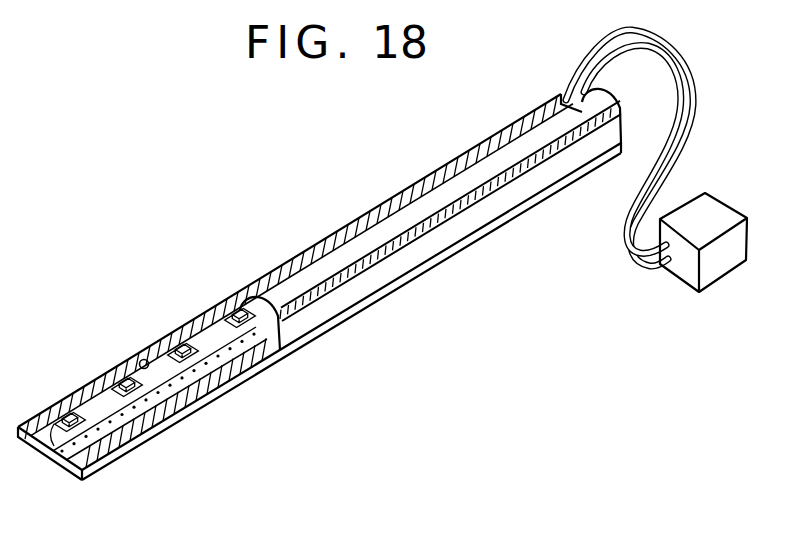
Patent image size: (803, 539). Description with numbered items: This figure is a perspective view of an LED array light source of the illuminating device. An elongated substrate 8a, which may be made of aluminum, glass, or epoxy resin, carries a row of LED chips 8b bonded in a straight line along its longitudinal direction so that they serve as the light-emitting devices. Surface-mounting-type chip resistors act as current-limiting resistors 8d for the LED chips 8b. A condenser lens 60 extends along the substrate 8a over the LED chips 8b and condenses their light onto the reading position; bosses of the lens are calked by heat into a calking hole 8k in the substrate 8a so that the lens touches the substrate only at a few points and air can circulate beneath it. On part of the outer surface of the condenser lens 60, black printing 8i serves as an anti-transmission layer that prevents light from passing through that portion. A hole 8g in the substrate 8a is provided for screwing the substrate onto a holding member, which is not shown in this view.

The substrate 8a is at (112, 460).
The LED chips 8b is at (165, 406).
The current-limiting resistors 8d is at (73, 412).
The hole for screwing 8g is at (143, 359).
The black printing 8i is at (310, 289).
The calking hole 8k is at (104, 433).
The condenser lens 60 is at (308, 326).